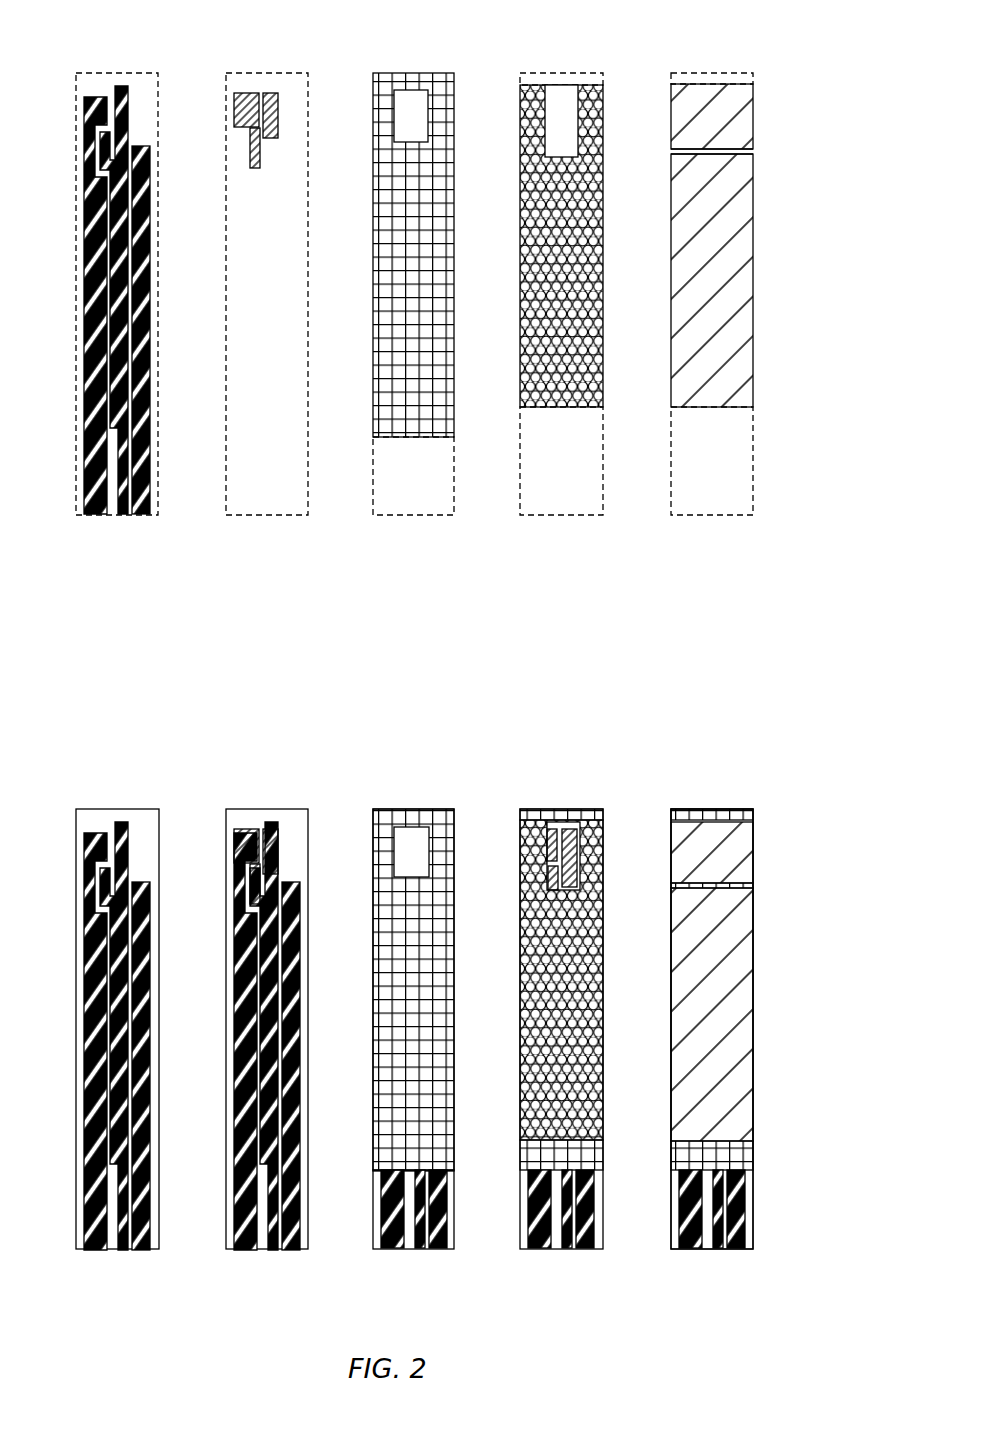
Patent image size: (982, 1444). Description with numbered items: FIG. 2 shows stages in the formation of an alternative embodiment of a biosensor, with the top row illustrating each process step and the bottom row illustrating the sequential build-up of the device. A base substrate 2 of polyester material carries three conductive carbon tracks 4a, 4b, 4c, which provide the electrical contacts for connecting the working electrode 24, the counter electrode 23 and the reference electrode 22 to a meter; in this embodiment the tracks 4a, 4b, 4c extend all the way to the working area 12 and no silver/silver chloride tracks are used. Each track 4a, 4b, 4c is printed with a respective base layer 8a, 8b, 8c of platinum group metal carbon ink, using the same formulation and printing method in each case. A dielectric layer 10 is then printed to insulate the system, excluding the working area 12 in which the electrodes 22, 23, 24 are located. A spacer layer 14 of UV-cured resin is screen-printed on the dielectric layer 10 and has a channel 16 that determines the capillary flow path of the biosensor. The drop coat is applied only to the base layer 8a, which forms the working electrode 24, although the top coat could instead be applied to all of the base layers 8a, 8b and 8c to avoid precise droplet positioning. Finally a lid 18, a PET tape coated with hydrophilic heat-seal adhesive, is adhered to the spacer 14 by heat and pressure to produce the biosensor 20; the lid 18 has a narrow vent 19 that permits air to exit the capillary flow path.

The base substrate 2 is at (138, 820).
The conductive carbon track 4a is at (148, 514).
The conductive carbon track 4b is at (121, 514).
The conductive carbon track 4c is at (84, 514).
The base layer 8a is at (271, 95).
The base layer 8b is at (250, 143).
The base layer 8c is at (245, 93).
The dielectric layer 10 is at (400, 80).
The working area 12 is at (418, 115).
The spacer layer 14 is at (597, 110).
The channel 16 is at (562, 124).
The lid 18 is at (738, 120).
The vent 19 is at (768, 150).
The biosensor 20 is at (785, 952).
The reference electrode 22 is at (548, 834).
The counter electrode 23 is at (553, 870).
The working electrode 24 is at (578, 832).